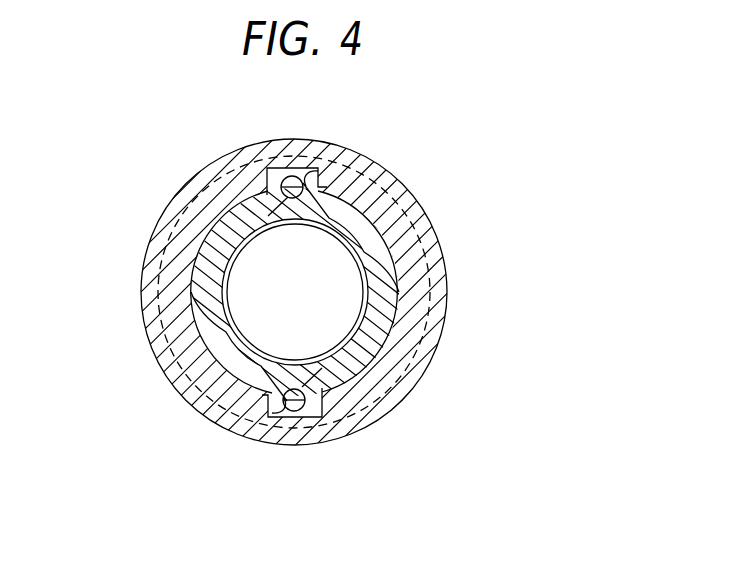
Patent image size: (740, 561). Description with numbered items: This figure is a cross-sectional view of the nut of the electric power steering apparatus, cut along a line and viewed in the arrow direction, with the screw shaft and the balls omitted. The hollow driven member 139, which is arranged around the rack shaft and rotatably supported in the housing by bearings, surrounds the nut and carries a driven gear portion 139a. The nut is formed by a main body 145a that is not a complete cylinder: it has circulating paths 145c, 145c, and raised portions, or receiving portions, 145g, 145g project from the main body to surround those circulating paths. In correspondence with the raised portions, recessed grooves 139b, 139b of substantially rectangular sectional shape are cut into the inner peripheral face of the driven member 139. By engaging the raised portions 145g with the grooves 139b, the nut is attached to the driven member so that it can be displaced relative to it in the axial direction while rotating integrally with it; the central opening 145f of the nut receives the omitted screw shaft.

The driven member 139 is at (200, 418).
The driven gear portion 139a is at (150, 336).
The recessed groove 139b is at (322, 170).
The main body 145a is at (395, 398).
The circulating path 145c is at (280, 186).
The bore 145f is at (339, 344).
The raised portion 145g is at (300, 176).